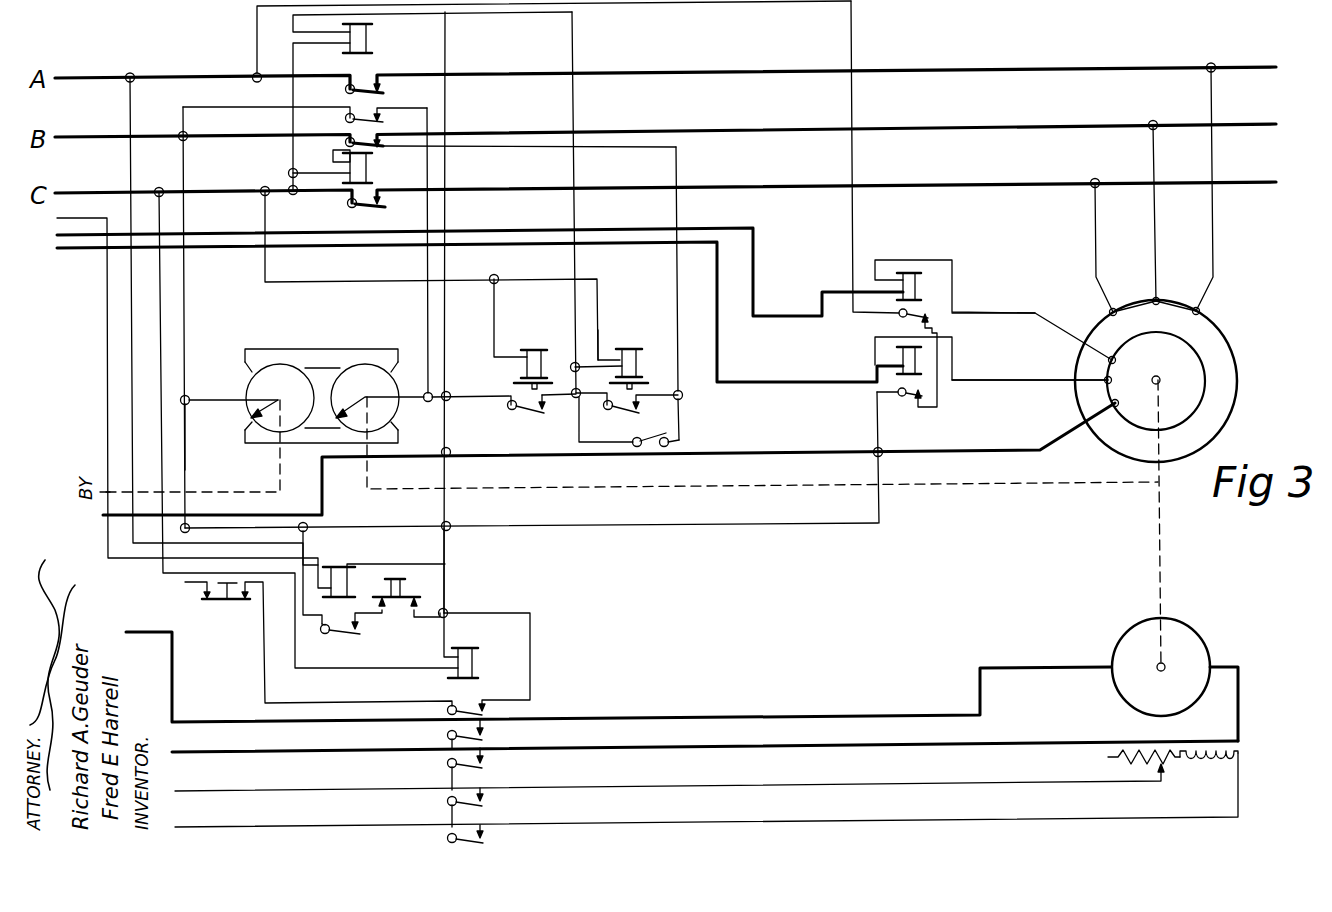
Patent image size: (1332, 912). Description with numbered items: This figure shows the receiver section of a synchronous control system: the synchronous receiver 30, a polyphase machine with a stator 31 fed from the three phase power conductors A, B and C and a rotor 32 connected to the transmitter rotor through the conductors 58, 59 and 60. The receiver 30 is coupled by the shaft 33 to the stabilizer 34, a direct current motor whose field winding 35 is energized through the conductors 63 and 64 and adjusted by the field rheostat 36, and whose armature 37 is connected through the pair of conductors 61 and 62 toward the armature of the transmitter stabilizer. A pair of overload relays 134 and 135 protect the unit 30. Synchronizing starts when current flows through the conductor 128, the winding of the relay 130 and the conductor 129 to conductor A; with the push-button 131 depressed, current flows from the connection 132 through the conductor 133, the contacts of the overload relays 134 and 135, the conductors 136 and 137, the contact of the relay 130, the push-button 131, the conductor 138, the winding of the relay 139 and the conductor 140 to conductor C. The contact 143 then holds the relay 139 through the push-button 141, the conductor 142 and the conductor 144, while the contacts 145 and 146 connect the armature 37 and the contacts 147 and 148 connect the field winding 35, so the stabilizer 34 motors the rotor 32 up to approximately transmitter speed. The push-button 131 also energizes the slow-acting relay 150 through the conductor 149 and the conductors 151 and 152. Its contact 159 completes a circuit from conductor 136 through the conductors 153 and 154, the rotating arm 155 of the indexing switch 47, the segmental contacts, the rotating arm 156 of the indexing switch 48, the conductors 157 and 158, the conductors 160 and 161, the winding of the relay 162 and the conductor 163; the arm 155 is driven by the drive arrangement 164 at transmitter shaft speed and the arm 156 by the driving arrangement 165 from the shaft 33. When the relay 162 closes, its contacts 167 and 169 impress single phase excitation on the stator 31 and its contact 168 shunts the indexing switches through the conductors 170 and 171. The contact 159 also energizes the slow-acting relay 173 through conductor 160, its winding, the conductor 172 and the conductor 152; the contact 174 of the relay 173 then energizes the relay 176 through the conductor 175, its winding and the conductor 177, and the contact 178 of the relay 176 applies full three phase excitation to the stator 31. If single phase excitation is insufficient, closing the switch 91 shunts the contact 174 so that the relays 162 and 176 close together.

The synchronous receiver 30 is at (1196, 302).
The stator 31 is at (1122, 312).
The rotor 32 is at (1142, 338).
The shaft 33 is at (1164, 540).
The stabilizer 34 is at (1213, 608).
The field winding 35 is at (1240, 758).
The field rheostat 36 is at (1108, 758).
The armature 37 is at (1204, 646).
The indexing switch 47 is at (290, 392).
The indexing switch 48 is at (377, 392).
The conductor 58 is at (228, 236).
The conductor 59 is at (232, 256).
The conductor 60 is at (774, 451).
The conductor 61 is at (154, 610).
The conductor 62 is at (180, 752).
The conductor 63 is at (272, 778).
The conductor 64 is at (270, 832).
The switch 91 is at (668, 442).
The conductor 128 is at (60, 218).
The conductor 129 is at (135, 396).
The relay 130 is at (340, 567).
The push-button 131 is at (404, 596).
The connection 132 is at (252, 70).
The conductor 133 is at (856, 40).
The overload relay 134 is at (920, 304).
The overload relay 135 is at (908, 388).
The conductor 136 is at (600, 528).
The conductor 137 is at (314, 620).
The conductor 138 is at (440, 620).
The relay 139 is at (476, 672).
The conductor 140 is at (356, 668).
The push-button 141 is at (217, 600).
The conductor 142 is at (262, 672).
The contact 143 is at (458, 708).
The conductor 144 is at (531, 660).
The contact 145 is at (446, 742).
The contact 146 is at (446, 770).
The contact 147 is at (446, 808).
The contact 148 is at (446, 844).
The conductor 149 is at (446, 566).
The slow-acting relay 150 is at (532, 350).
The conductor 151 is at (496, 322).
The conductor 152 is at (352, 288).
The conductor 153 is at (188, 462).
The conductor 154 is at (226, 388).
The rotating arm 155 is at (252, 410).
The rotating arm 156 is at (360, 430).
The conductor 157 is at (418, 398).
The conductor 158 is at (482, 398).
The contact 159 is at (518, 408).
The conductor 160 is at (580, 378).
The conductor 161 is at (580, 278).
The relay 162 is at (366, 53).
The conductor 163 is at (292, 124).
The drive arrangement 164 is at (206, 492).
The driving arrangement 165 is at (950, 486).
The contact 167 is at (372, 80).
The contact 168 is at (375, 112).
The contact 169 is at (352, 143).
The conductor 170 is at (186, 330).
The conductor 171 is at (446, 330).
The conductor 172 is at (598, 330).
The slow-acting relay 173 is at (633, 349).
The contact 174 is at (612, 408).
The conductor 175 is at (680, 378).
The relay 176 is at (370, 183).
The conductor 177 is at (328, 166).
The contact 178 is at (363, 206).